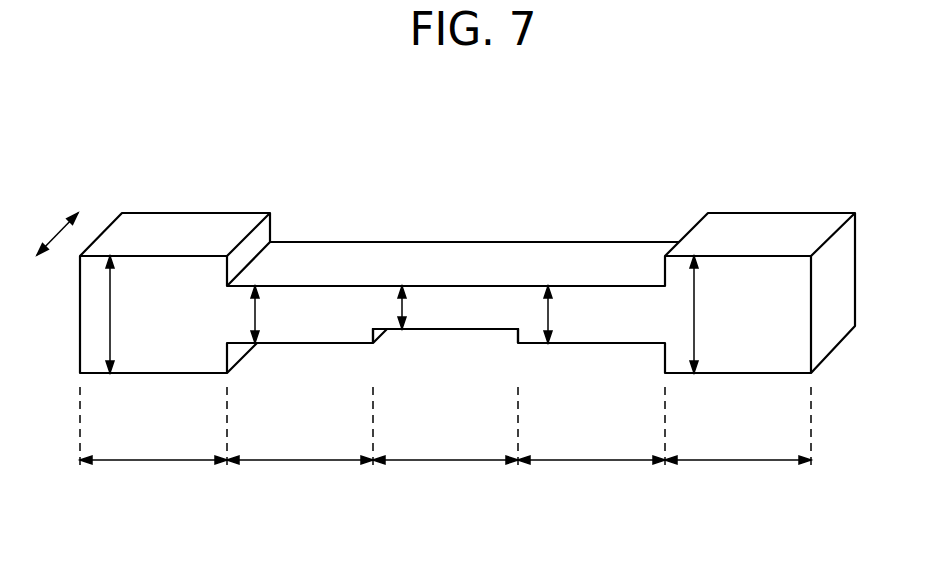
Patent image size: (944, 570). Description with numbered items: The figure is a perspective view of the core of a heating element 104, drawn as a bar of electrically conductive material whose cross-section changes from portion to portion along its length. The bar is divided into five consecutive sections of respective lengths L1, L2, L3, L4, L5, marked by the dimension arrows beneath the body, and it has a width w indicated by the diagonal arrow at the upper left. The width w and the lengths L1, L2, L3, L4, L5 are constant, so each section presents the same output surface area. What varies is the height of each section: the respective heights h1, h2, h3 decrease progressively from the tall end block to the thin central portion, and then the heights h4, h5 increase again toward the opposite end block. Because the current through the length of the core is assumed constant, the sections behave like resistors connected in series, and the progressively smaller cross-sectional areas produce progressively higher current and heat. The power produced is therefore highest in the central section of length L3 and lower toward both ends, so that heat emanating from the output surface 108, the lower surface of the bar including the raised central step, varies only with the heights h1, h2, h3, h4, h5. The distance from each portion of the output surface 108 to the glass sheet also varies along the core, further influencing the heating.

The heating element 104 is at (452, 116).
The output surface 108 is at (443, 329).
The width w is at (53, 230).
The first height h1 is at (129, 314).
The second height h2 is at (274, 314).
The third height h3 is at (423, 307).
The fourth height h4 is at (567, 314).
The fifth height h5 is at (714, 314).
The first length L1 is at (153, 428).
The second length L2 is at (300, 428).
The third length L3 is at (445, 428).
The fourth length L4 is at (591, 428).
The fifth length L5 is at (738, 428).